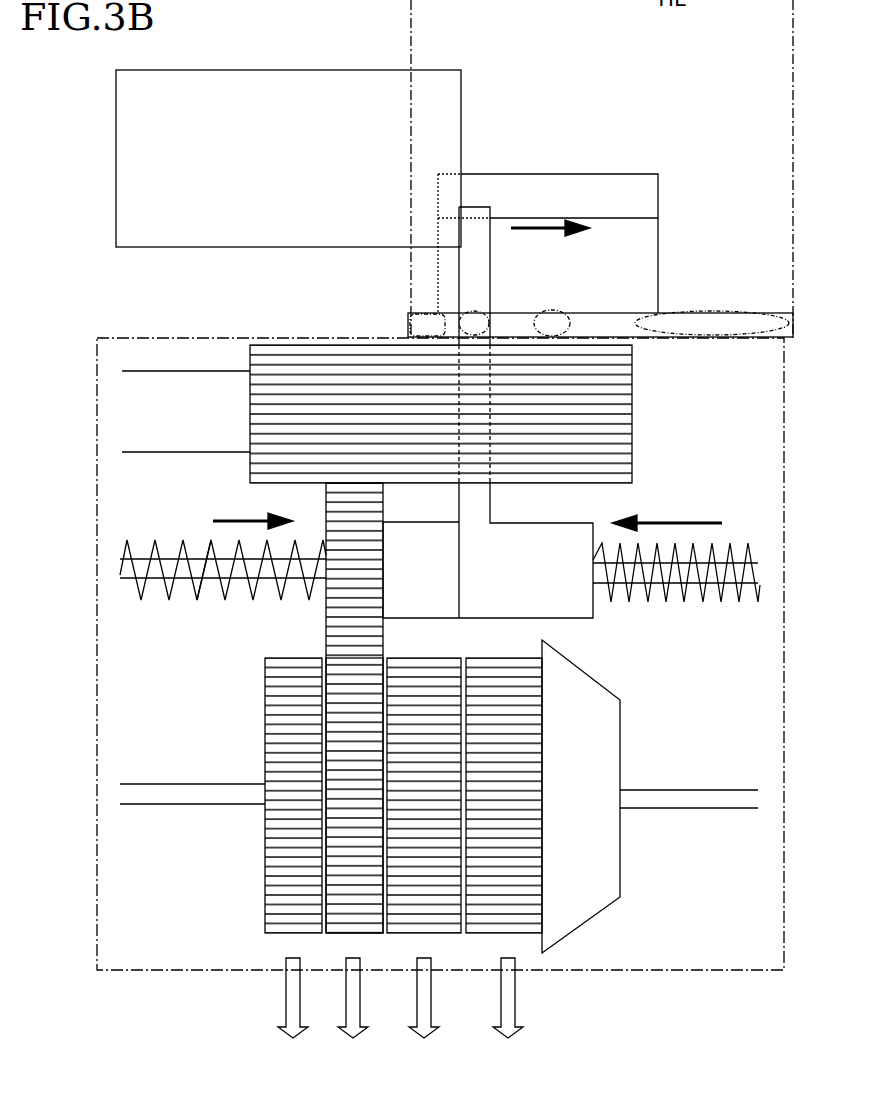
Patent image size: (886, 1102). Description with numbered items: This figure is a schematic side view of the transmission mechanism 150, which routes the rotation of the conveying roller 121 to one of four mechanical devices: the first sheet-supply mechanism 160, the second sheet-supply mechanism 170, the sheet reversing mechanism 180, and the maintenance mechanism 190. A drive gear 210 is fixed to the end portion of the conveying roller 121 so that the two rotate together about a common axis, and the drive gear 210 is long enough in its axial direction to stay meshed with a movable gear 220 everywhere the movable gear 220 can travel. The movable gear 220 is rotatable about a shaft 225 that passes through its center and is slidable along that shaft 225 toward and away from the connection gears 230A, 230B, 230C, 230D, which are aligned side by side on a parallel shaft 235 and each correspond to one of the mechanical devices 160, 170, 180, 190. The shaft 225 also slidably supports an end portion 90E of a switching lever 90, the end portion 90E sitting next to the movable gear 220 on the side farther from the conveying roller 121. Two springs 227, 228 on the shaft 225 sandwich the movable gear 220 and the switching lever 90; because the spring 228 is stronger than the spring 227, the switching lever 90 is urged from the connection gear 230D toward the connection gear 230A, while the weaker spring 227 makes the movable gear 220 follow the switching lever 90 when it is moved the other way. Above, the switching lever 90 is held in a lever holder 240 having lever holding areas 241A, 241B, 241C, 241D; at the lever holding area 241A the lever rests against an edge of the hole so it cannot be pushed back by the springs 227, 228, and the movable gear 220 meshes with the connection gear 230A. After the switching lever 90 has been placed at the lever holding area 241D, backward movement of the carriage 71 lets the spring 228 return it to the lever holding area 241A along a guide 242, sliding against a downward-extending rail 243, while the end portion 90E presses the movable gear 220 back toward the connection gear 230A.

The carriage 71 is at (461, 97).
The switching lever 90 is at (478, 207).
The rail 243 is at (612, 218).
The guide 242 is at (658, 235).
The lever holder 240 is at (681, 280).
The lever holding area 241A is at (425, 308).
The lever holding area 241B is at (493, 320).
The lever holding area 241C is at (560, 309).
The lever holding area 241D is at (712, 313).
The transmission mechanism 150 is at (785, 438).
The conveying roller 121 is at (210, 377).
The drive gear 210 is at (632, 456).
The movable gear 220 is at (326, 606).
The shaft 225 is at (173, 565).
The spring 227 is at (198, 588).
The spring 228 is at (648, 595).
The end portion 90E is at (566, 620).
The connection gear 230A is at (265, 873).
The connection gear 230B is at (350, 717).
The connection gear 230C is at (423, 658).
The connection gear 230D is at (528, 680).
The shaft 235 is at (188, 784).
The first sheet-supply mechanism 160 is at (293, 1014).
The second sheet-supply mechanism 170 is at (353, 1014).
The sheet reversing mechanism 180 is at (424, 1014).
The maintenance mechanism 190 is at (508, 1014).